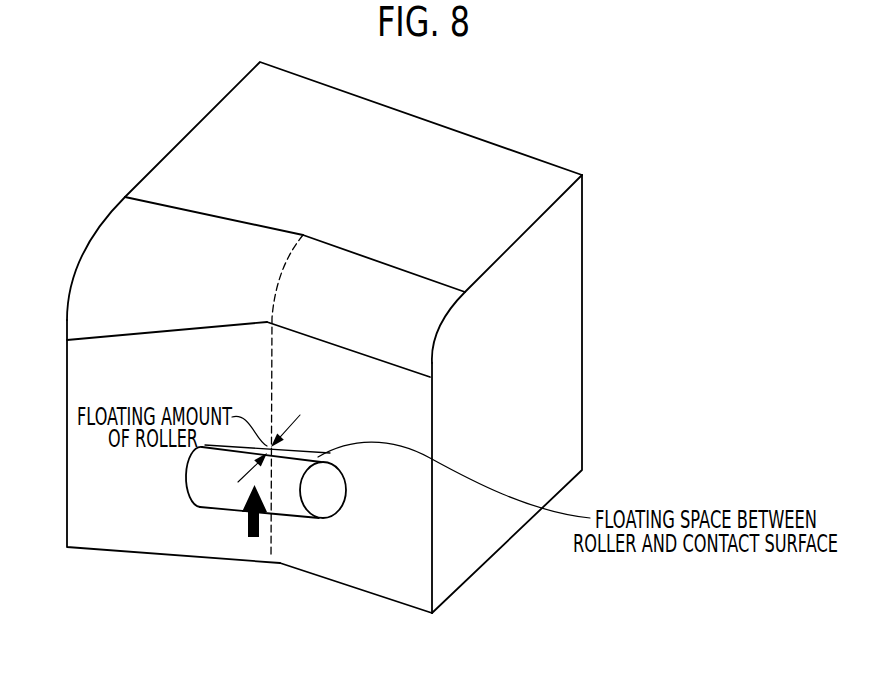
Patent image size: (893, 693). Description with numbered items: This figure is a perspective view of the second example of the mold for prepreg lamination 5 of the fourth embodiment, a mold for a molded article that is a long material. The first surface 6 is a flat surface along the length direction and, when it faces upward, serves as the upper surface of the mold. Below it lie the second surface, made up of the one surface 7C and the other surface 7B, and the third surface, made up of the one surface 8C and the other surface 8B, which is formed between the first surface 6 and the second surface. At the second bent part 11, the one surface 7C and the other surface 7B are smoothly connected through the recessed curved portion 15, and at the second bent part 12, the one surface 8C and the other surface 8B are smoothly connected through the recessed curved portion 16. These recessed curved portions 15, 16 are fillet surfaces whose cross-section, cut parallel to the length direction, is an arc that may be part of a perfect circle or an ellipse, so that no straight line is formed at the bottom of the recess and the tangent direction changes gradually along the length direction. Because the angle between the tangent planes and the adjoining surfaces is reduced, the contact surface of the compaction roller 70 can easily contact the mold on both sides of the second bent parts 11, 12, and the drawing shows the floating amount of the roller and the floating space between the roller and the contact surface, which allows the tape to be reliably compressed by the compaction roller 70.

The mold for prepreg lamination 5 is at (567, 304).
The first surface 6 is at (406, 133).
The other surface 7B is at (103, 523).
The one surface 7C is at (392, 580).
The other surface 8B is at (143, 308).
The one surface 8C is at (372, 338).
The second bent part 11 is at (262, 547).
The second bent part 12 is at (260, 286).
The recessed curved portion 15 is at (300, 548).
The recessed curved portion 16 is at (301, 286).
The compaction roller 70 is at (210, 476).